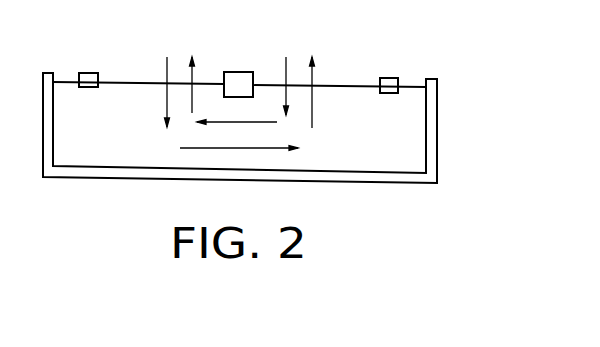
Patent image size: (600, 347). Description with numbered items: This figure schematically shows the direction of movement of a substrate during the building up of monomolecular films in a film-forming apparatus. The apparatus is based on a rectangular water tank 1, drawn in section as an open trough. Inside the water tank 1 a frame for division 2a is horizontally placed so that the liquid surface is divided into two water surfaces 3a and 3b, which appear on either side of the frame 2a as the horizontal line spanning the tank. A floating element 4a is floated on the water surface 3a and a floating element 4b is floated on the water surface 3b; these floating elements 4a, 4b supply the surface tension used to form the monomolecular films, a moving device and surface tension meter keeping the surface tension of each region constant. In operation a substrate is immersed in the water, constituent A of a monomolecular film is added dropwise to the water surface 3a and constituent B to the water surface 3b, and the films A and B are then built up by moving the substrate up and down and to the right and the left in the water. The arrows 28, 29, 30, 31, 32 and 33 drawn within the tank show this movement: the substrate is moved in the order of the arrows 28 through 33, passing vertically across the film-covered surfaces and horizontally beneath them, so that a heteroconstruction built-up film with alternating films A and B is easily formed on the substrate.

The water tank 1 is at (437, 140).
The frame (for division) 2a is at (233, 72).
The water surface 3a is at (345, 85).
The water surface 3b is at (125, 82).
The floating element 4a is at (390, 78).
The floating element 4b is at (85, 73).
The arrow 28 is at (279, 74).
The arrow 29 is at (237, 112).
The arrow 30 is at (197, 71).
The arrow 31 is at (167, 78).
The arrow 32 is at (239, 139).
The arrow 33 is at (316, 80).